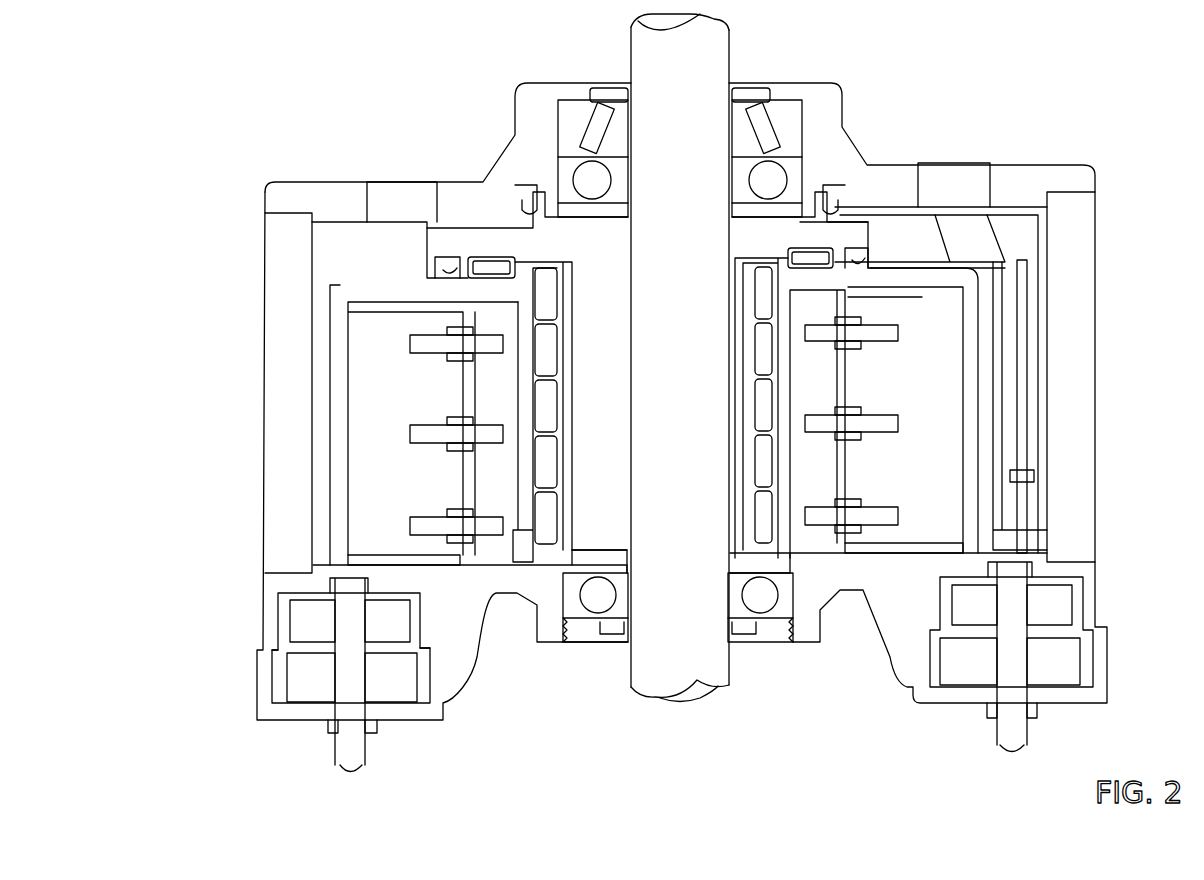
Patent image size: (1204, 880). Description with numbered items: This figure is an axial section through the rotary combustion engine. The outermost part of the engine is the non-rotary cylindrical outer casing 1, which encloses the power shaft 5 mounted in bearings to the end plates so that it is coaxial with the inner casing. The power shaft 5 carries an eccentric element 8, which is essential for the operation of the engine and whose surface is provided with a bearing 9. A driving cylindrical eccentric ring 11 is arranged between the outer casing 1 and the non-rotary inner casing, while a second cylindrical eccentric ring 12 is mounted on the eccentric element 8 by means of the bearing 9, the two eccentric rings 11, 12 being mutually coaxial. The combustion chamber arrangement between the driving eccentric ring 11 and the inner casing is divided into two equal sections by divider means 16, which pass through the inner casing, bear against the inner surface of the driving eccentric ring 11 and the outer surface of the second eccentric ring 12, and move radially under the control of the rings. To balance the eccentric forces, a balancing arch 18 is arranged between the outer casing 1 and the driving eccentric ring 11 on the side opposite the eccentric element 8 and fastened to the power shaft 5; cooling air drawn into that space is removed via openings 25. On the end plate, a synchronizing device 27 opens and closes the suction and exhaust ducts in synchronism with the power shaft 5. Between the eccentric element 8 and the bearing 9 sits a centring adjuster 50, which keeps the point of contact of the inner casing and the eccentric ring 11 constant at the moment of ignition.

The non-rotary cylindrical outer casing 1 is at (1080, 293).
The power shaft 5 is at (640, 662).
The eccentric element 8 is at (603, 515).
The bearing 9 is at (548, 300).
The driving cylindrical eccentric ring 11 is at (340, 432).
The second cylindrical eccentric ring 12 is at (528, 410).
The divider means 16 is at (385, 352).
The balancing arch 18 is at (1035, 395).
The openings 25 is at (403, 200).
The synchronizing device 27 is at (291, 731).
The centring adjuster 50 is at (743, 393).